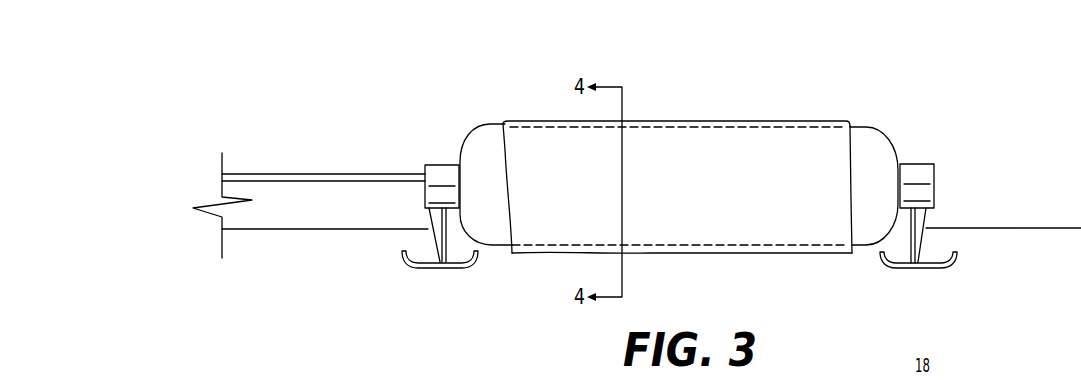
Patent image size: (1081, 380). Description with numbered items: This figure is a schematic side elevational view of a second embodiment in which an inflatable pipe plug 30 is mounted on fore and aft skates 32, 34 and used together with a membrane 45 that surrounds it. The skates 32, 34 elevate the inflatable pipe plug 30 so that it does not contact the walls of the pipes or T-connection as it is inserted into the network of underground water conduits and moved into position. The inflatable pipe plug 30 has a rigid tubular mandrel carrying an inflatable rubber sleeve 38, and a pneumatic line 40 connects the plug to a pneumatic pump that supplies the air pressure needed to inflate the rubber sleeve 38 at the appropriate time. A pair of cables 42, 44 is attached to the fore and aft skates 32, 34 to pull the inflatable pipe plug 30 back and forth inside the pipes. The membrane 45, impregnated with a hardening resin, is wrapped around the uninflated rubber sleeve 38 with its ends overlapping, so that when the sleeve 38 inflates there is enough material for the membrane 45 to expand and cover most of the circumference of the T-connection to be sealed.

The inflatable pipe plug 30 is at (705, 101).
The fore skate 32 is at (922, 248).
The aft skate 34 is at (438, 269).
The inflatable rubber sleeve 38 is at (883, 137).
The pneumatic line 40 is at (277, 173).
The cable 42 is at (1045, 227).
The cable 44 is at (268, 230).
The membrane 45 is at (546, 121).